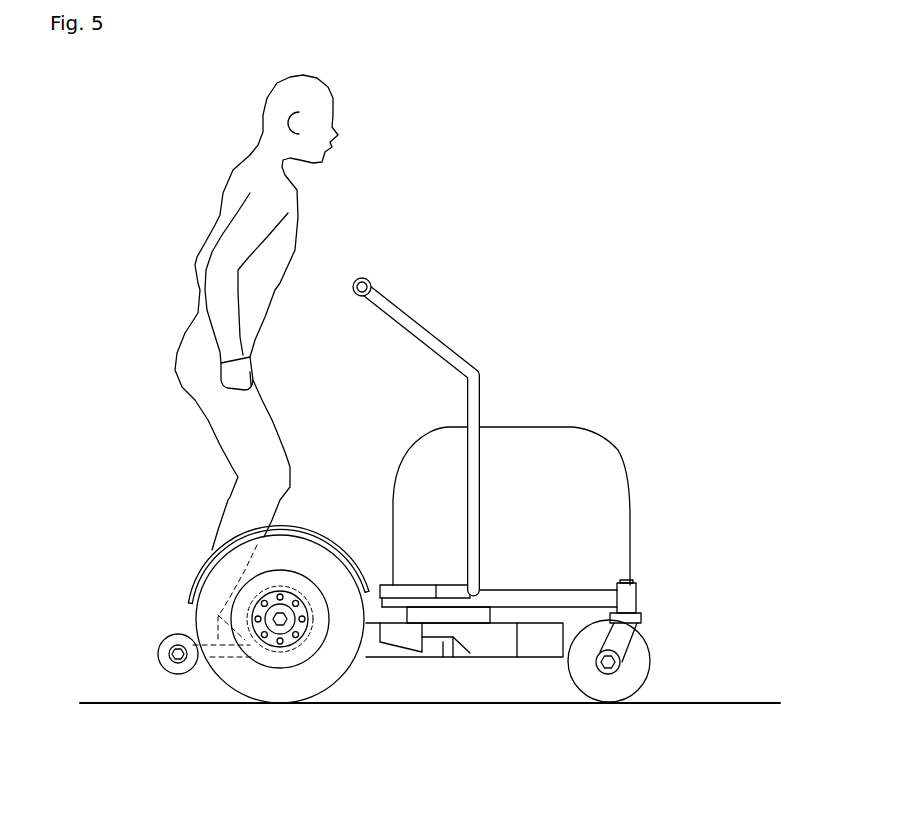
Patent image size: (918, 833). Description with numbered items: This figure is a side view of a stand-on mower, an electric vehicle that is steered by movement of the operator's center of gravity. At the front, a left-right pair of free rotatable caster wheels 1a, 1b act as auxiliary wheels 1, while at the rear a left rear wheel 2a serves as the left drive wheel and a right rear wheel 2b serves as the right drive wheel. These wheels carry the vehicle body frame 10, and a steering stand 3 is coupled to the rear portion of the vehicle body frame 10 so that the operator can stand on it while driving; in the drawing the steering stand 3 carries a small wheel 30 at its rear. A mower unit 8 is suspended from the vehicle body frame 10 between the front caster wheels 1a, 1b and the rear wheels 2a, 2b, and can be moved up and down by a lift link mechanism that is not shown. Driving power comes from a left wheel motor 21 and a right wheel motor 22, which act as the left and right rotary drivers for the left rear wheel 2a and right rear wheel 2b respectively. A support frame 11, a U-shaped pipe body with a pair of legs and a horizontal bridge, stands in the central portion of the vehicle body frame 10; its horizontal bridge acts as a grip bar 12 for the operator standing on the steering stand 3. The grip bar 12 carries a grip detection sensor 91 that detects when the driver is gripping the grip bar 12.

The auxiliary wheels 1 is at (640, 657).
The caster wheel 1a is at (655, 657).
The caster wheel 1b is at (655, 657).
The left rear wheel 2a is at (262, 657).
The right rear wheel 2b is at (265, 706).
The steering stand 3 is at (205, 682).
The mower unit 8 is at (523, 659).
The vehicle body frame 10 is at (642, 588).
The support frame 11 is at (445, 340).
The grip bar 12 is at (365, 289).
The left wheel motor 21 is at (278, 536).
The right wheel motor 22 is at (338, 527).
The auxiliary wheel 30 is at (139, 659).
The grip detection sensor 91 is at (370, 278).